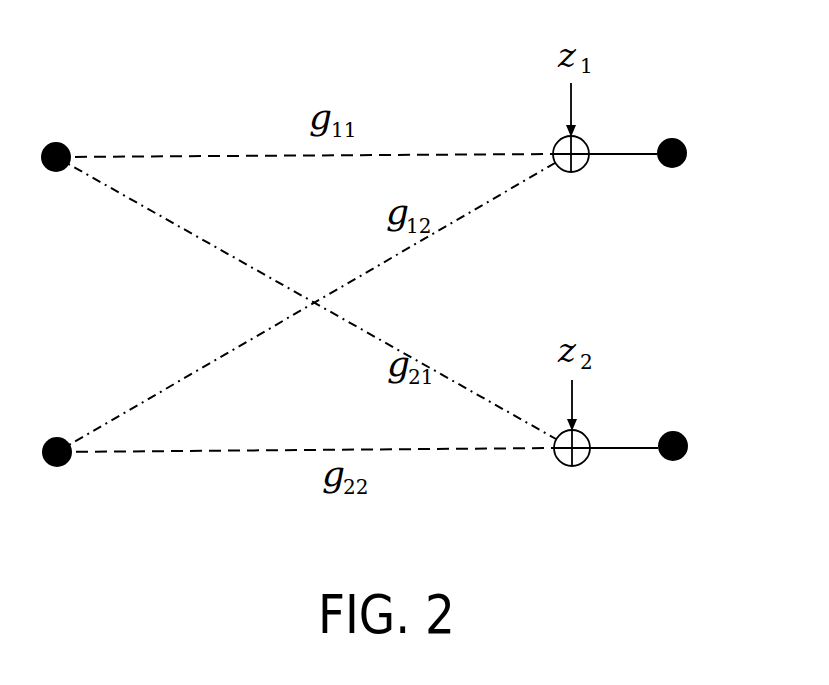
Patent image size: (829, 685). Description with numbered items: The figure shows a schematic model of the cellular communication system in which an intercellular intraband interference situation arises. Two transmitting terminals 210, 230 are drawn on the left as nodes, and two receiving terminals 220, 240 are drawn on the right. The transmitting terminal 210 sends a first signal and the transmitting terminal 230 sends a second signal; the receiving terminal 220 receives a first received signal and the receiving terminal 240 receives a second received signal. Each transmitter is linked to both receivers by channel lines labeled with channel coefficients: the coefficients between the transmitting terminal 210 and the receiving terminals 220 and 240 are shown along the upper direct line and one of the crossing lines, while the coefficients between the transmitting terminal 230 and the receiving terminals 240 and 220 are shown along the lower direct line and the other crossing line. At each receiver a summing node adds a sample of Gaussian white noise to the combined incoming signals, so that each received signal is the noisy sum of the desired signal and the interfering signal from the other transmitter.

The transmitting terminal 210 is at (60, 141).
The receiving terminal 220 is at (672, 138).
The transmitting terminal 230 is at (58, 467).
The receiving terminal 240 is at (670, 461).